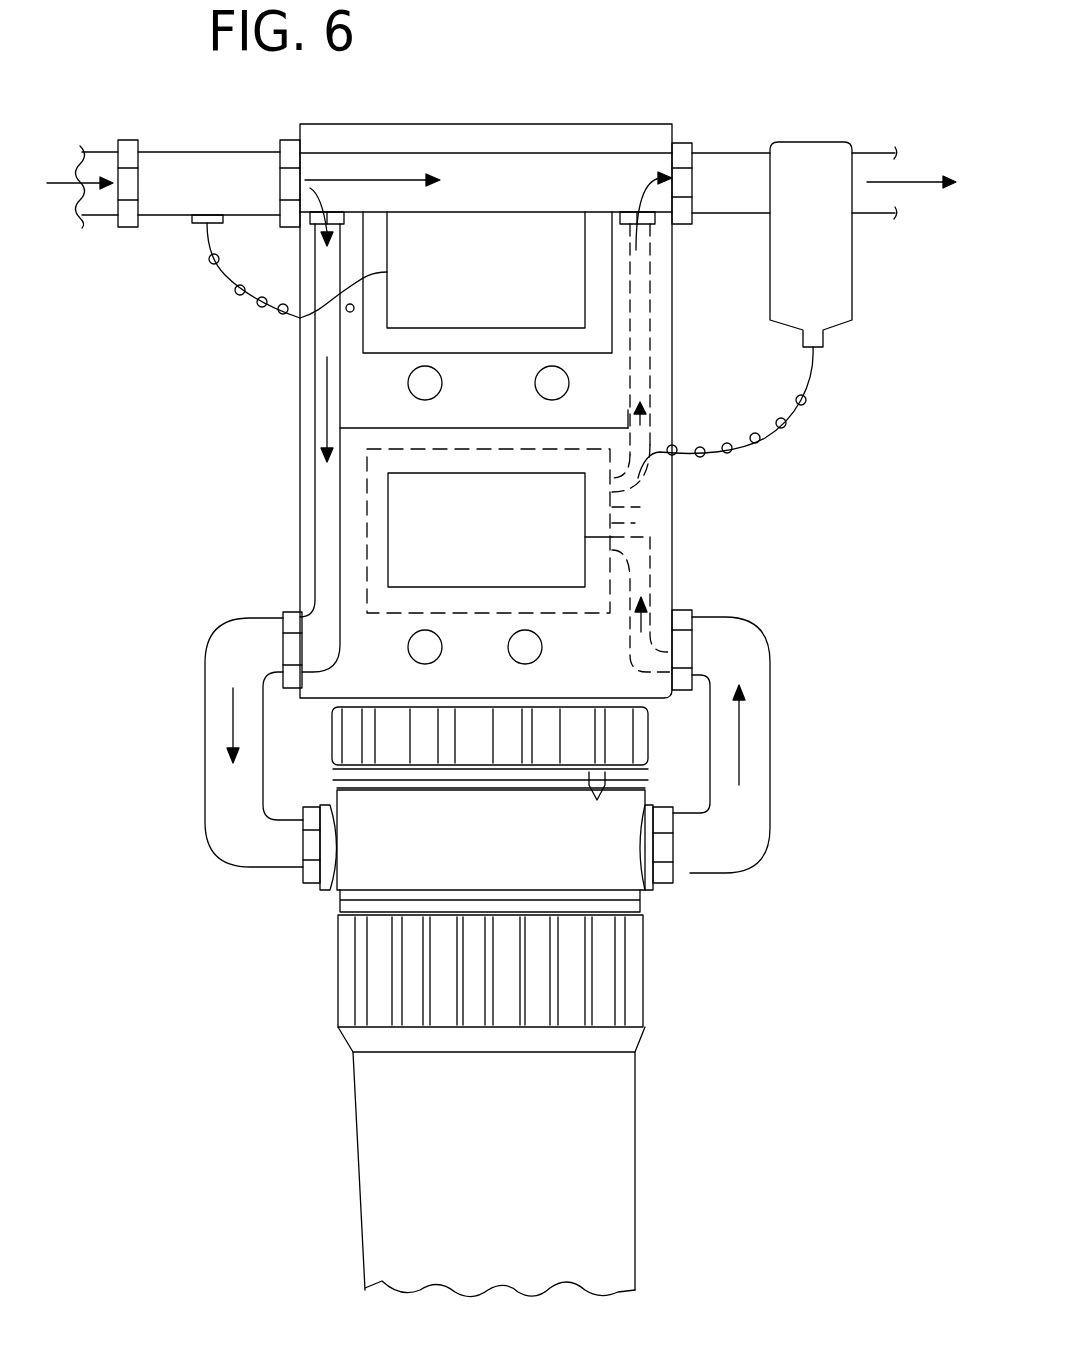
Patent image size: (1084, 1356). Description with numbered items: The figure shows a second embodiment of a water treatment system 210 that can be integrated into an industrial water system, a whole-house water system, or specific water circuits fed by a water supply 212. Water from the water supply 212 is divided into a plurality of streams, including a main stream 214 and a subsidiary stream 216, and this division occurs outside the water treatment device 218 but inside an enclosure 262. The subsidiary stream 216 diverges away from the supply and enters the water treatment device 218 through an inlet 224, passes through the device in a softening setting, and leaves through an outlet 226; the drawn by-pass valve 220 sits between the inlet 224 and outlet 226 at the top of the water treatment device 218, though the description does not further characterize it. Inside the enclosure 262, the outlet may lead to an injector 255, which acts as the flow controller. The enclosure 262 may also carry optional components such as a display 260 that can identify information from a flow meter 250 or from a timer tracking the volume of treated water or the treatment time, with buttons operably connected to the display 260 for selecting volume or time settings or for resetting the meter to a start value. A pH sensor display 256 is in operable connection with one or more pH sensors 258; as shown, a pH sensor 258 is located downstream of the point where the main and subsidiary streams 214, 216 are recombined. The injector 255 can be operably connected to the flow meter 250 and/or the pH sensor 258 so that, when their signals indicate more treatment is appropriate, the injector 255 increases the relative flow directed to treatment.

The water treatment system 210 is at (500, 689).
The water supply 212 is at (81, 187).
The main stream 214 is at (352, 178).
The subsidiary stream 216 is at (327, 420).
The water treatment device 218 is at (357, 1158).
The bypass valve 220 is at (300, 942).
The inlet 224 is at (300, 880).
The outlet 226 is at (673, 883).
The flow meter 250 is at (237, 152).
The injector 255 is at (643, 527).
The pH sensor display 256 is at (612, 537).
The pH sensor 258 is at (852, 293).
The display 260 is at (337, 300).
The enclosure 262 is at (300, 510).